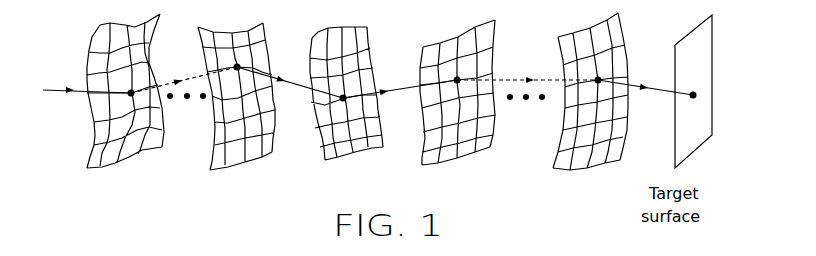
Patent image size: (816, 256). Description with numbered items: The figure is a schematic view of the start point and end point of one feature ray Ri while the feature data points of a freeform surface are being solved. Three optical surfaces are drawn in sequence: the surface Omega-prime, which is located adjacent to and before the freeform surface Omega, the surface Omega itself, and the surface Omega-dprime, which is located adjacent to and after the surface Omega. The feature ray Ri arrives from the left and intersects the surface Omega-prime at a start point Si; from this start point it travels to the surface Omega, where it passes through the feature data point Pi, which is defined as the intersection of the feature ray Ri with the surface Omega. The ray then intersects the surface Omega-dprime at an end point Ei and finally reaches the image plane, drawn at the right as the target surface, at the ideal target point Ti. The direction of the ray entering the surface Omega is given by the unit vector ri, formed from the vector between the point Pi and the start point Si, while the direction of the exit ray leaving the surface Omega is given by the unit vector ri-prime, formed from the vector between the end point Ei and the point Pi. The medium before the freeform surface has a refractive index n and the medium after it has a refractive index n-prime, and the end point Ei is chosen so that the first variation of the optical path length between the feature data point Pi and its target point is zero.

The feature ray Ri is at (140, 82).
The start point Si is at (244, 77).
The unit vector of incident ray ri is at (290, 81).
The feature data point Pi is at (348, 90).
The unit vector of exit ray ri-prime is at (400, 98).
The end point Ei is at (526, 72).
The ideal target point Ti is at (649, 85).
The refractive index before the freeform surface n is at (280, 26).
The refractive index after the freeform surface n-prime is at (388, 32).
The surface Ω' Omega-prime is at (236, 108).
The surface Ω Omega is at (346, 110).
The surface Ω'' Omega-dprime is at (457, 107).